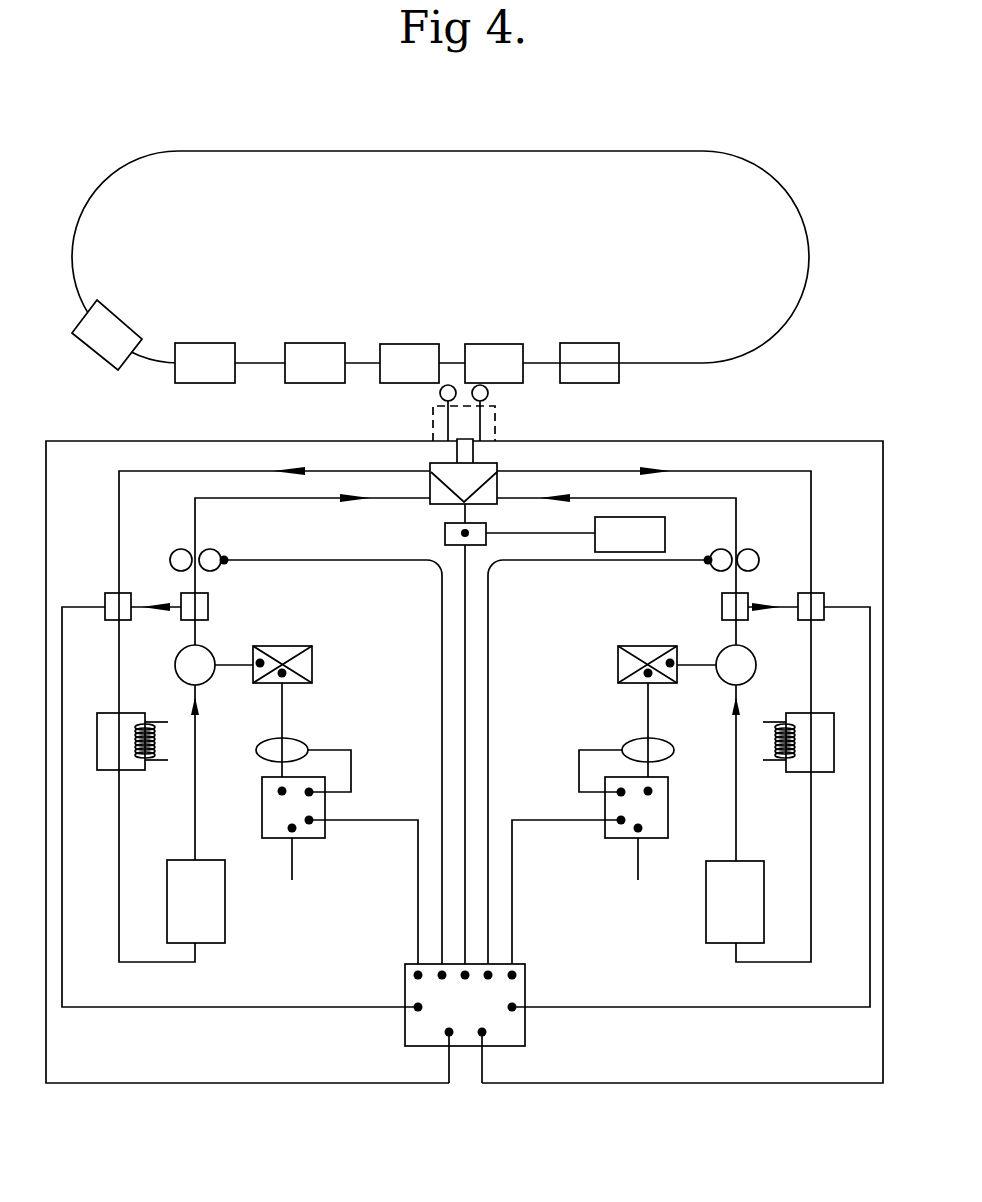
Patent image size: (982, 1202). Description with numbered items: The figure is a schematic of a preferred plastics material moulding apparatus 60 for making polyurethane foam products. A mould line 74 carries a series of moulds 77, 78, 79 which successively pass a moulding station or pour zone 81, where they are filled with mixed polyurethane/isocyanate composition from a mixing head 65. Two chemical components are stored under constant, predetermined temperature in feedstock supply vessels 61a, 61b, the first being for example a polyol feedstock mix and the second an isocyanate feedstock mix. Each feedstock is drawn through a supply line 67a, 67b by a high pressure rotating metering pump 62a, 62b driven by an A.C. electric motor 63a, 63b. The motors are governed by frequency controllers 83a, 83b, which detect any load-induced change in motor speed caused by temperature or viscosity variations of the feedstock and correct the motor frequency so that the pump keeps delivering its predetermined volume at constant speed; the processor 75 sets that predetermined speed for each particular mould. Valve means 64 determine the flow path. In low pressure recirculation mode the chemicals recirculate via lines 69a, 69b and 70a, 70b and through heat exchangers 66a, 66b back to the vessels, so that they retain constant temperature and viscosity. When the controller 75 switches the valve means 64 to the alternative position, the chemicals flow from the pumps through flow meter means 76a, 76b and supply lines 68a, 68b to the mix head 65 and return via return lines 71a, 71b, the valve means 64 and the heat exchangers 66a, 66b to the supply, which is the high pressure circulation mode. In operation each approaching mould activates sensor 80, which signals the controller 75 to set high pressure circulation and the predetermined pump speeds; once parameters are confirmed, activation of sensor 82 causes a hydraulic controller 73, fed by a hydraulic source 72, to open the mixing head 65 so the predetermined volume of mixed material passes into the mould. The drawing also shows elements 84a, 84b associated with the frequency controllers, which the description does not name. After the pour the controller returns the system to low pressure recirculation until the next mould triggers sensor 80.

The apparatus 60 is at (418, 1090).
The feedstock 61a is at (735, 902).
The feedstock 61b is at (196, 901).
The pump 62a is at (717, 653).
The pump 62b is at (215, 657).
The pump motor 63a is at (617, 663).
The electric motor 63b is at (313, 663).
The valve means 64 is at (105, 593).
The mixing head 65 is at (442, 504).
The heat exchanger 66a is at (798, 712).
The heat exchanger 66b is at (128, 712).
The supply line 67a is at (735, 733).
The supply line 67b is at (197, 750).
The supply line 68a is at (736, 520).
The supply line 68b is at (195, 511).
The recirculation line 69a is at (772, 603).
The recirculation line 69b is at (157, 605).
The recirculation line 70a is at (813, 857).
The recirculation line 70b is at (118, 857).
The return line 71a is at (811, 503).
The return line 71b is at (118, 500).
The hydraulic source 72 is at (575, 534).
The hydraulic controller 73 is at (443, 538).
The mould line 74 is at (202, 151).
The processor 75 is at (465, 1023).
The flow meter means 76a is at (708, 566).
The flow meter means 76b is at (218, 548).
The mould 77 is at (494, 363).
The mould 78 is at (409, 363).
The mould 79 is at (315, 363).
The sensor 80 is at (440, 397).
The moulding station 81 is at (490, 430).
The sensor 82 is at (489, 393).
The frequency controller 83a is at (620, 838).
The frequency controller 83b is at (310, 838).
The actuator 84a is at (578, 772).
The actuator 84b is at (352, 772).